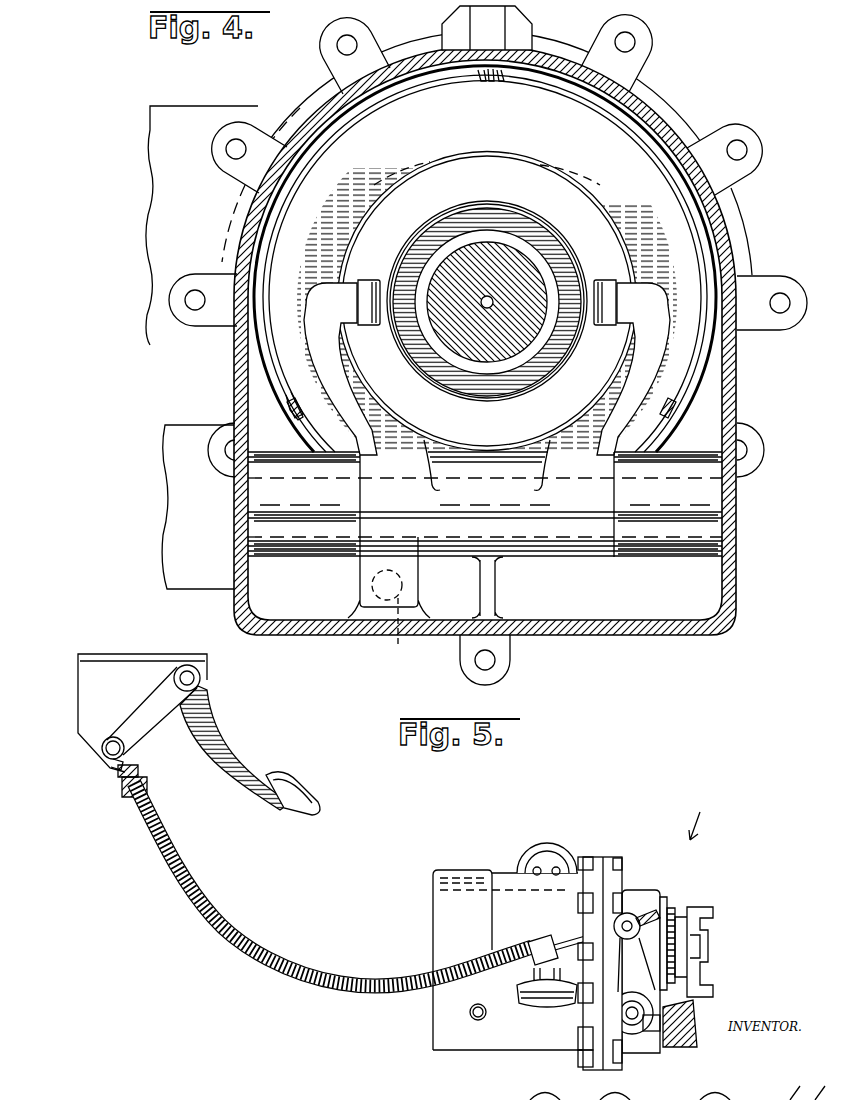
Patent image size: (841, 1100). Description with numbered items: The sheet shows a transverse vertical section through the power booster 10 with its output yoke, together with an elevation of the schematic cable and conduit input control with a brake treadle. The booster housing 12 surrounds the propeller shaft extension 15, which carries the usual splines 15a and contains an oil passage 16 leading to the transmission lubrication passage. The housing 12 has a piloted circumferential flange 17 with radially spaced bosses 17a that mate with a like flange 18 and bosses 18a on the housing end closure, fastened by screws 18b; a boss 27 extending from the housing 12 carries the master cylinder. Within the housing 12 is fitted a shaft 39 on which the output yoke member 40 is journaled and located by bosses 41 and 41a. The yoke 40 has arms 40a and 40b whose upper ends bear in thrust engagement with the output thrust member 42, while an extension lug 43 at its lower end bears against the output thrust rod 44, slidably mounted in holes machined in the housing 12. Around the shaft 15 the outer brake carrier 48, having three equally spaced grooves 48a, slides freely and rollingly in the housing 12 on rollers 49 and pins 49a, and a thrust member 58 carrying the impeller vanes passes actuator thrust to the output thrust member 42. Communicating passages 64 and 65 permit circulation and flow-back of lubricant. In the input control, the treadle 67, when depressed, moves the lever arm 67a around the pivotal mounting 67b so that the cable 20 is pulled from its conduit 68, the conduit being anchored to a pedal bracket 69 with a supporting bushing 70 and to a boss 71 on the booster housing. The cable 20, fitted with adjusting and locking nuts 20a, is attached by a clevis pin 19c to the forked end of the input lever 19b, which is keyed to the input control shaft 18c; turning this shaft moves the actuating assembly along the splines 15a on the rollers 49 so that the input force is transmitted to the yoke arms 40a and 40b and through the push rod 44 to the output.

In FIG. 5, the power booster 10 is at (768, 822).
In FIG. 4, the booster housing 12 is at (504, 353).
In FIG. 5, the booster housing 12 is at (455, 880).
In FIG. 4, the propeller shaft extension 15 is at (504, 283).
In FIG. 4, the splines 15a is at (530, 258).
In FIG. 4, the oil passage 16 is at (484, 306).
In FIG. 4, the piloted circumferential flange 17 is at (665, 112).
In FIG. 5, the piloted circumferential flange 17 is at (594, 1006).
In FIG. 4, the radial spaced bosses 17a is at (636, 27).
In FIG. 5, the radial spaced bosses 17a is at (588, 862).
In FIG. 5, the flange 18 is at (598, 1022).
In FIG. 5, the bosses 18a is at (600, 868).
In FIG. 4, the screws 18b is at (632, 43).
In FIG. 5, the screws 18b is at (612, 890).
In FIG. 5, the input control shaft 18c is at (652, 1031).
In FIG. 5, the input lever 19b is at (632, 987).
In FIG. 5, the clevis pin 19c is at (630, 914).
In FIG. 5, the input link 20 is at (118, 777).
In FIG. 5, the adjusting and locking nuts 20a is at (656, 914).
In FIG. 4, the boss 27 is at (166, 204).
In FIG. 4, the shaft 39 is at (567, 476).
In FIG. 5, the shaft 39 is at (474, 1016).
In FIG. 4, the output yoke member 40 is at (535, 546).
In FIG. 4, the yoke arm 40a is at (345, 386).
In FIG. 4, the yoke arm 40b is at (640, 345).
In FIG. 4, the boss 41 is at (295, 518).
In FIG. 4, the boss 41a is at (664, 530).
In FIG. 4, the output thrust member 42 is at (410, 182).
In FIG. 4, the extension lug 43 is at (404, 565).
In FIG. 4, the output thrust rod 44 is at (397, 634).
In FIG. 4, the outer brake carrier 48 is at (560, 88).
In FIG. 4, the grooves or splines 48a is at (496, 84).
In FIG. 4, the rollers 49 is at (488, 78).
In FIG. 5, the pins 49a is at (555, 867).
In FIG. 4, the thrust member 58 is at (668, 238).
In FIG. 4, the communicating passage 64 is at (306, 588).
In FIG. 4, the communicating passage 65 is at (618, 592).
In FIG. 5, the treadle 67 is at (290, 782).
In FIG. 5, the lever arm 67a is at (155, 706).
In FIG. 5, the pivotal mounting 67b is at (201, 680).
In FIG. 5, the conduit 68 is at (200, 907).
In FIG. 5, the pedal bracket 69 is at (108, 665).
In FIG. 5, the supporting bushing 70 is at (150, 783).
In FIG. 5, the boss 71 is at (538, 940).